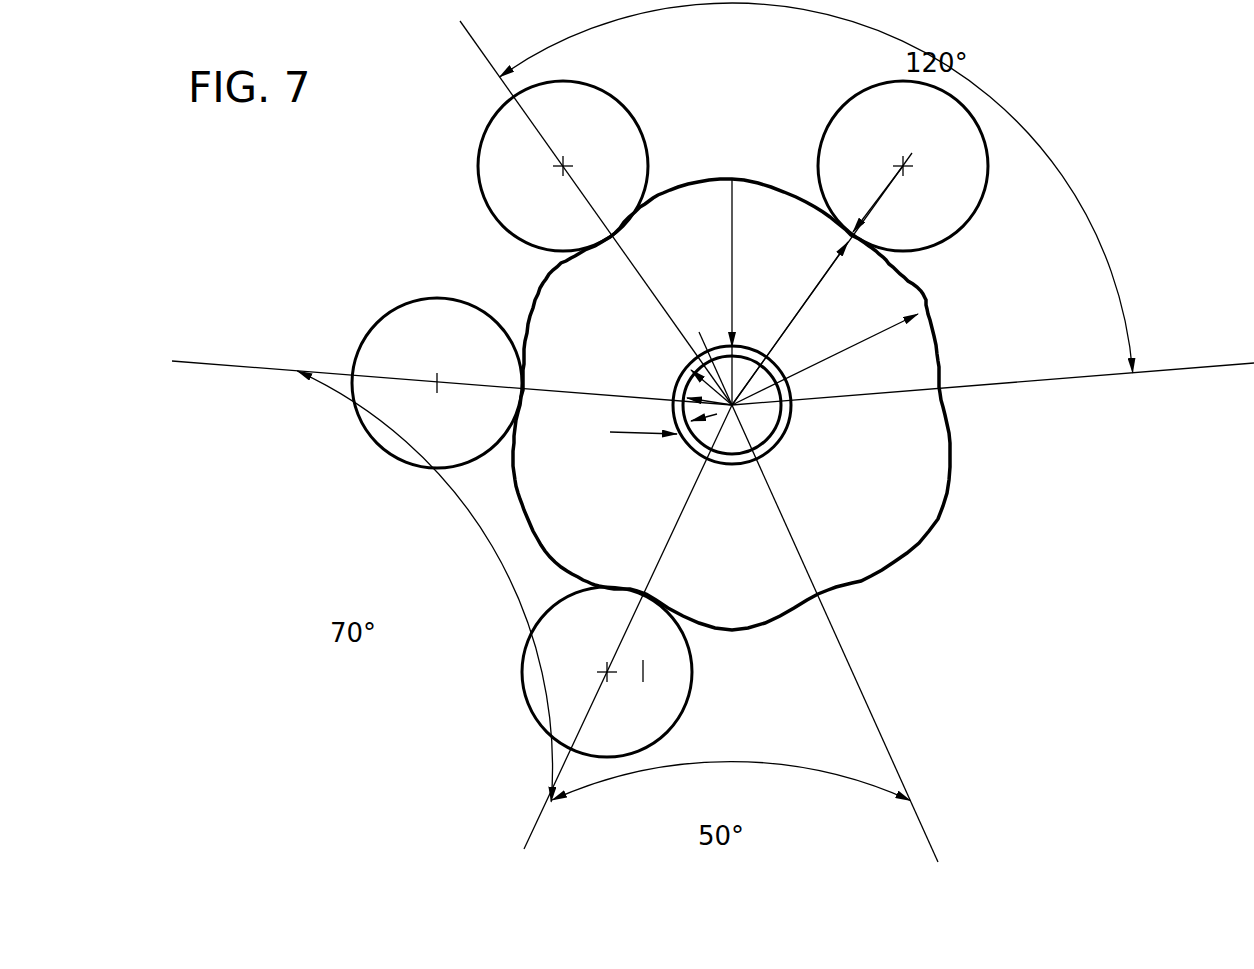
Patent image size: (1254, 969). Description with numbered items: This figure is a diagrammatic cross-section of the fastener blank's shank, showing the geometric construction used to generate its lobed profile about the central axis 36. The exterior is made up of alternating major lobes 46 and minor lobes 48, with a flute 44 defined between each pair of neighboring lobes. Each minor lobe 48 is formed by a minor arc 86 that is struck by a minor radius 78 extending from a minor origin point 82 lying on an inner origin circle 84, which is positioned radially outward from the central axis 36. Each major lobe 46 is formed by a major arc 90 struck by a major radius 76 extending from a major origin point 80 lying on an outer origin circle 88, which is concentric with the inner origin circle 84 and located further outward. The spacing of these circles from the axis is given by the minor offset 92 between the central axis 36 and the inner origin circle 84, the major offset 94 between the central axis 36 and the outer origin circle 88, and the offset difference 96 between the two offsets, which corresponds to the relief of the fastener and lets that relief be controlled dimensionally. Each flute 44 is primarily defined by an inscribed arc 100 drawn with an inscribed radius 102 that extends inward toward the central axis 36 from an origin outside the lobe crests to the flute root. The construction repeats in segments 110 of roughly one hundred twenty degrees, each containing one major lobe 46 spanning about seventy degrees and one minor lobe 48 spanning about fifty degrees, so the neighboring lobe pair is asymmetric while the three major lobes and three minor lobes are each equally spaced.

The central axis 36 is at (729, 456).
The flute 44 is at (948, 402).
The major lobe 46 is at (763, 177).
The minor lobe 48 is at (536, 302).
The major radius 76 is at (736, 218).
The minor radius 78 is at (878, 340).
The major origin point 80 is at (745, 352).
The minor origin point 82 is at (778, 383).
The inner origin circle 84 is at (776, 448).
The minor arc 86 is at (940, 322).
The outer origin circle 88 is at (771, 433).
The major arc 90 is at (703, 180).
The minor offset 92 is at (652, 419).
The major offset 94 is at (695, 364).
The offset difference 96 is at (688, 428).
The inscribed arc 100 is at (878, 236).
The inscribed radius 102 is at (962, 222).
The segment 110 is at (1135, 370).